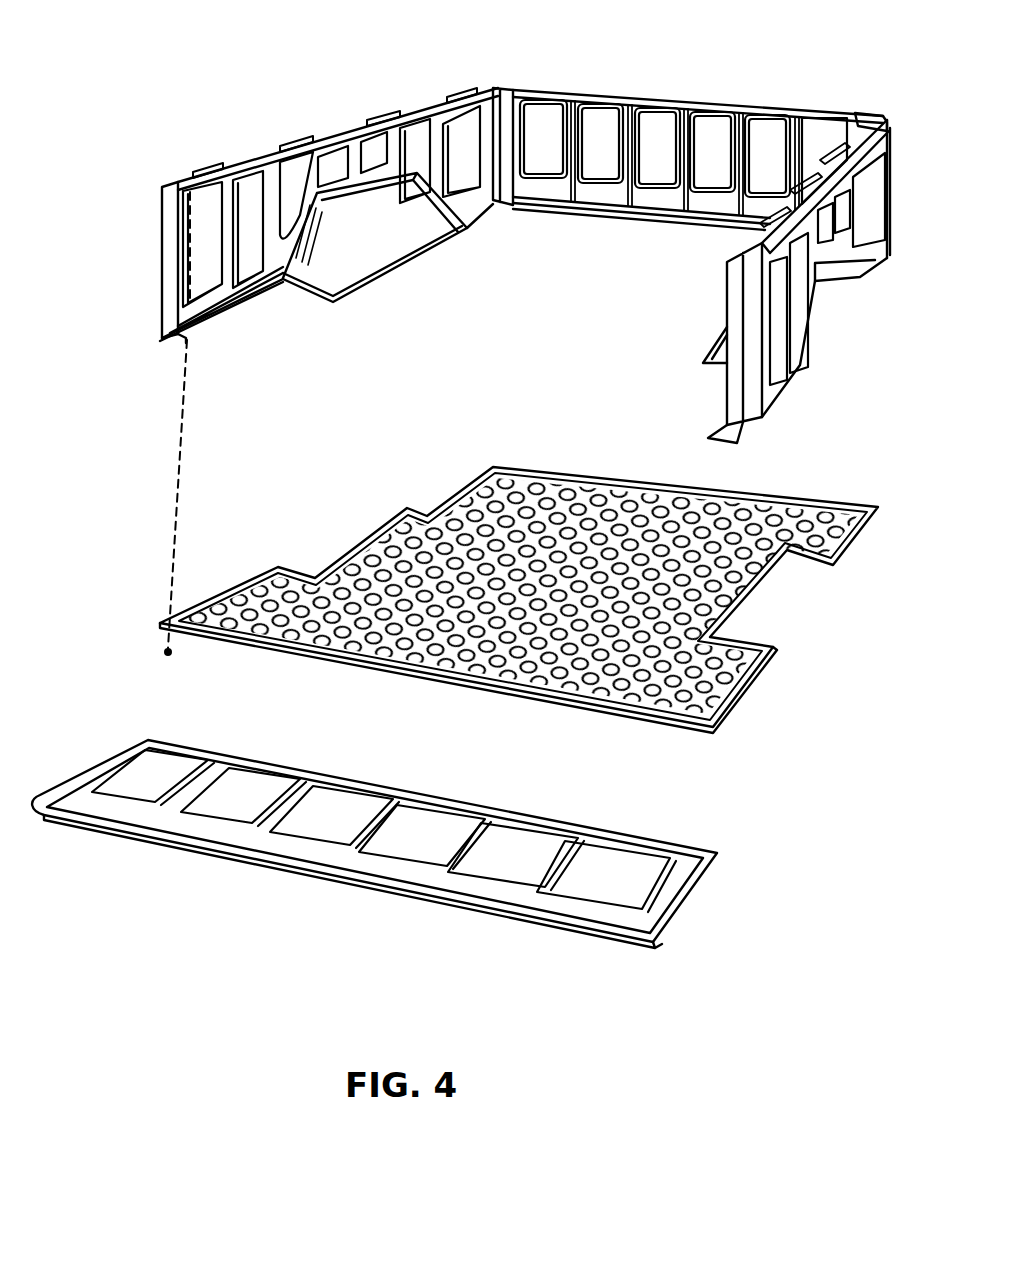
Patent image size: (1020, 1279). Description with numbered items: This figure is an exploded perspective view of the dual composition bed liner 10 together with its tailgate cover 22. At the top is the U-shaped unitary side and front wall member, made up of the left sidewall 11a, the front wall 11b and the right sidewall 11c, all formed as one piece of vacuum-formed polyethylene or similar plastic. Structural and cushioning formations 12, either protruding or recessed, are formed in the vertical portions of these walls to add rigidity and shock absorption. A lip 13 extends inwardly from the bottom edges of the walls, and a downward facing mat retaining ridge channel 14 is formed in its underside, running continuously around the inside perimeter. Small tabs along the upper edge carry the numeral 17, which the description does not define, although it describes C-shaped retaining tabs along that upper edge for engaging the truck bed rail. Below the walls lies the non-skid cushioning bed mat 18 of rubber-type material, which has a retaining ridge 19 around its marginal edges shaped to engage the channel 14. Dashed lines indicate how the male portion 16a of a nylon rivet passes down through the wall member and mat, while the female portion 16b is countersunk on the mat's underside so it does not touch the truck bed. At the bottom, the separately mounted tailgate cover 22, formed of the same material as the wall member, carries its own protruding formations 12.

The dual composition bed liner 10 is at (323, 33).
The left sidewall 11a is at (172, 186).
The front wall 11b is at (612, 82).
The right sidewall 11c is at (877, 274).
The structural and cushioning formations 12 is at (372, 148).
The lip 13 is at (164, 340).
The mat retaining ridge channel 14 is at (188, 341).
The male portion of nylon rivet 16a is at (196, 170).
The female portion of nylon rivet 16b is at (170, 517).
The tab 17 is at (222, 172).
The bed mat 18 is at (519, 600).
The retaining ridge 19 is at (262, 582).
The tailgate cover 22 is at (358, 849).